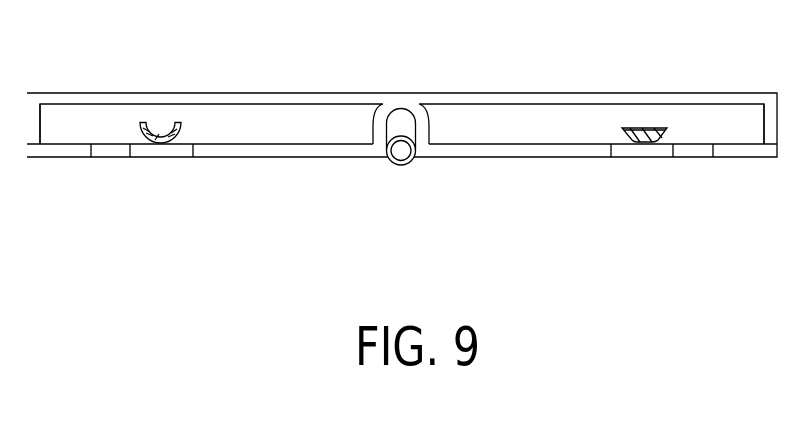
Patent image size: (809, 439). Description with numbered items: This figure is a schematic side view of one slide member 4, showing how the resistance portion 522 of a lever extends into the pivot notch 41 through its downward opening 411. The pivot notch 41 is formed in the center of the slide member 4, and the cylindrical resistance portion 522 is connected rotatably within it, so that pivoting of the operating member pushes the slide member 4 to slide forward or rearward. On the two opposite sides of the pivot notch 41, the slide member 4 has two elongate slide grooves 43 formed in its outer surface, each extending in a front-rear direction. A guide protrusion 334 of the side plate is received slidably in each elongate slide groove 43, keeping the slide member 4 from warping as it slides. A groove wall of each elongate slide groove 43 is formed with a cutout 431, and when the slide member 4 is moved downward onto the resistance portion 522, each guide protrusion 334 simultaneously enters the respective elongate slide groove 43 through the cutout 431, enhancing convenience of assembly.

The slide member 4 is at (323, 90).
The elongate slide groove 43 is at (233, 128).
The pivot notch 41 is at (402, 120).
The downward opening 411 is at (388, 157).
The resistance portion 522 is at (407, 163).
The guide protrusion 334 is at (160, 136).
The cutout 431 is at (165, 153).